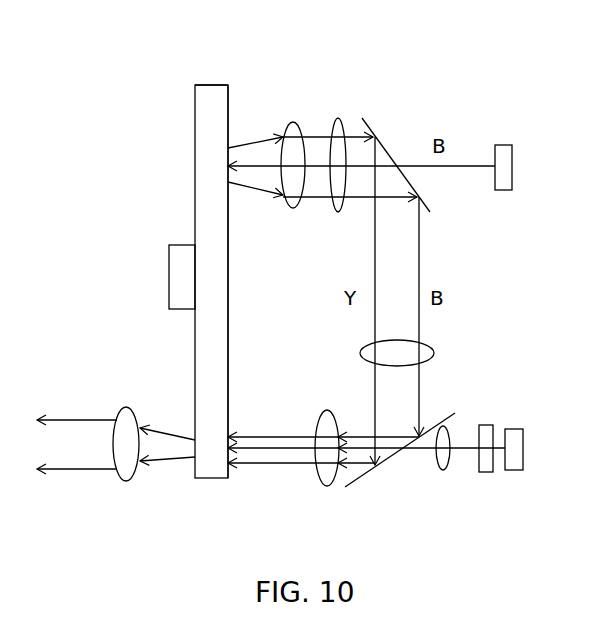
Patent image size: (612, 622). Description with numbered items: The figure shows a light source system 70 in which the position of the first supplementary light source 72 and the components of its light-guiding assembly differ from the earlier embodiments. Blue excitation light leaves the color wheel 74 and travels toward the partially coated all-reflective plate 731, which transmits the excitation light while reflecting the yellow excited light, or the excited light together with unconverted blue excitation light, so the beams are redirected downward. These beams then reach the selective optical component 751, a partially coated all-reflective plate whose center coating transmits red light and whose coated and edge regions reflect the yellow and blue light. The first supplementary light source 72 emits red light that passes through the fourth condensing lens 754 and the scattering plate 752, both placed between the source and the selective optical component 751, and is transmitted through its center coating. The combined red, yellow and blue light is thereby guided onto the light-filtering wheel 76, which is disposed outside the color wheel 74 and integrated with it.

The light source system 70 is at (198, 254).
The color wheel 74 is at (230, 86).
The light-filtering wheel 76 is at (458, 470).
The all-reflective plate 731 is at (420, 201).
The selective optical component 751 is at (447, 422).
The scattering plate 752 is at (490, 472).
The fourth condensing lens 754 is at (446, 471).
The first supplementary light source 72 is at (519, 428).